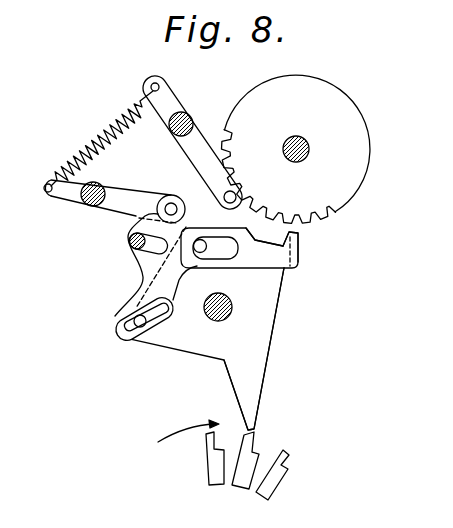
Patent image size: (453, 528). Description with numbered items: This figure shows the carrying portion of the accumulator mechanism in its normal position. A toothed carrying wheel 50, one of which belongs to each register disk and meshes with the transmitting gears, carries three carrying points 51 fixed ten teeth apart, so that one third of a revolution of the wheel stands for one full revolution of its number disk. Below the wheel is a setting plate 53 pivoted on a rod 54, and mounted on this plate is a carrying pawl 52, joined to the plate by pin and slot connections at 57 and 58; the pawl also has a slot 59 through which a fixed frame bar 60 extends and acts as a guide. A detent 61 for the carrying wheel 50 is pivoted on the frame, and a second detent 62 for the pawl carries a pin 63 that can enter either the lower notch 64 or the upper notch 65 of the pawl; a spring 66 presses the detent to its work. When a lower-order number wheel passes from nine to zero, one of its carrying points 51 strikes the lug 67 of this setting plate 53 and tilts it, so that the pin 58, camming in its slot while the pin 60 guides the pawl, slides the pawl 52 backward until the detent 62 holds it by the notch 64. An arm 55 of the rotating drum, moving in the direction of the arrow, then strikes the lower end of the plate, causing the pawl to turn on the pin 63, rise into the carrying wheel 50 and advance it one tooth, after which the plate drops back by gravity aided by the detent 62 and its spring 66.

The carrying wheel 50 is at (296, 149).
The carrying point 51 is at (290, 230).
The carrying pawl 52 is at (150, 286).
The setting plate 53 is at (257, 358).
The rod 54 is at (216, 315).
The arm of drum 55 is at (288, 452).
The pin and slot connection 57 is at (205, 248).
The pin 58 is at (139, 325).
The slot 59 is at (150, 247).
The frame bar 60 is at (128, 240).
The detent 61 is at (196, 139).
The detent 62 is at (118, 207).
The pin 63 is at (185, 190).
The notch 64 is at (181, 232).
The notch 65 is at (164, 200).
The spring 66 is at (104, 130).
The lug 67 is at (300, 247).